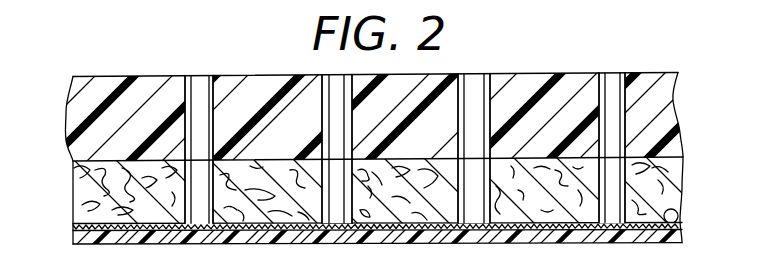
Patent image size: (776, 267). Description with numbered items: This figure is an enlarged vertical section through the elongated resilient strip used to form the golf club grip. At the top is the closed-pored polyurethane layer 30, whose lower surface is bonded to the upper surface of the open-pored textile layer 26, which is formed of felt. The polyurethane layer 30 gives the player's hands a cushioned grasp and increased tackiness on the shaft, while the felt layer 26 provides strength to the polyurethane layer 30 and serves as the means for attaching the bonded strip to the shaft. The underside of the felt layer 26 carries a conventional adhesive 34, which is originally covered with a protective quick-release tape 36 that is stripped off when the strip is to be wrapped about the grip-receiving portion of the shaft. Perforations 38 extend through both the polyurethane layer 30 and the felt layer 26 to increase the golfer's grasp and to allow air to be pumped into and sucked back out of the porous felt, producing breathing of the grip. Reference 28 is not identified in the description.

The open-pored textile layer 26 is at (665, 176).
The intermediate bonding layer 28 is at (668, 214).
The closed-pored polyurethane layer 30 is at (666, 110).
The adhesive 34 is at (680, 225).
The protective quick-release tape 36 is at (618, 238).
The perforations 38 is at (613, 80).